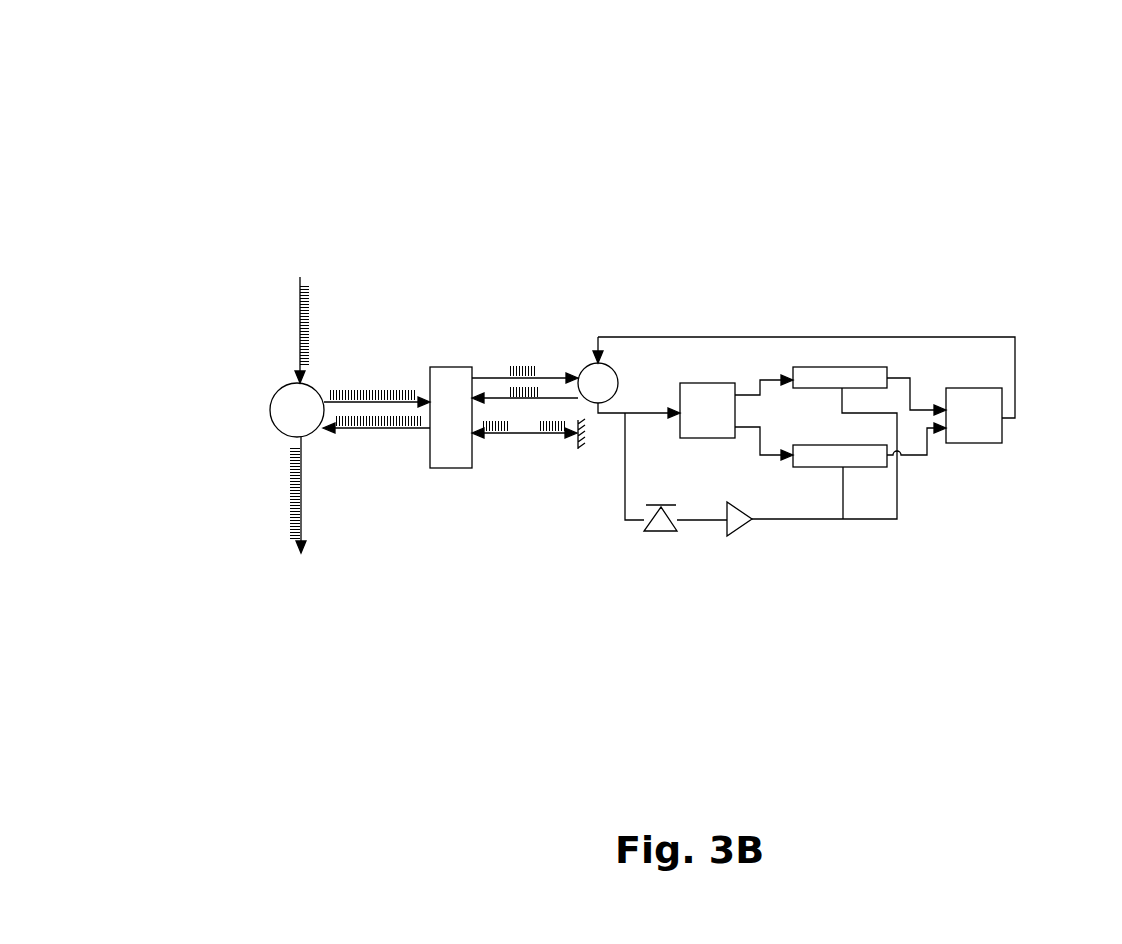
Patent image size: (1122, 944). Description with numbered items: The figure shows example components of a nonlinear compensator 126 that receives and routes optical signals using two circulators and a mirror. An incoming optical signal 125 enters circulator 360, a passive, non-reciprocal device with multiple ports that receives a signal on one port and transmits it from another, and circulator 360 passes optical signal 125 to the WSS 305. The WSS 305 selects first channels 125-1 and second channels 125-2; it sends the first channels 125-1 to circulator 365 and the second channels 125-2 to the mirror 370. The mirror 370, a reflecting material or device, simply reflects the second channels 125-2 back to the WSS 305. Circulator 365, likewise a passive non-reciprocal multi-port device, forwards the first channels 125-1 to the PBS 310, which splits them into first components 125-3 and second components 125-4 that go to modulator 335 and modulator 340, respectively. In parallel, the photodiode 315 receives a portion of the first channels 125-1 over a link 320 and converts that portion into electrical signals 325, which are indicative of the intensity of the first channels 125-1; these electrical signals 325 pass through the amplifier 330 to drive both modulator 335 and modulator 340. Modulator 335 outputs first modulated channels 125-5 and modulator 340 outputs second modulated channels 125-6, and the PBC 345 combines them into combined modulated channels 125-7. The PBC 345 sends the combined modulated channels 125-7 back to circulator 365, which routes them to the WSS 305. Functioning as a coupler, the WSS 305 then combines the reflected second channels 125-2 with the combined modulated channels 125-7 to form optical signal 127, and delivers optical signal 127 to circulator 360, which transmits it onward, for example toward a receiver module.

The nonlinear compensator 126 is at (228, 42).
The optical signal 125 is at (297, 330).
The optical signal 127 is at (383, 430).
The WSS 305 is at (430, 378).
The PBS 310 is at (713, 383).
The photodiode 315 is at (665, 533).
The link 320 is at (630, 522).
The electrical signals 325 is at (848, 502).
The amplifier 330 is at (737, 534).
The modulator 335 is at (832, 367).
The modulator 340 is at (822, 445).
The PBC 345 is at (980, 443).
The circulator 360 is at (270, 404).
The circulator 365 is at (613, 337).
The mirror 370 is at (572, 437).
The first channels 125-1 is at (478, 372).
The second channels 125-2 is at (518, 436).
The first components 125-3 is at (762, 380).
The second components 125-4 is at (768, 458).
The first modulated channels 125-5 is at (900, 372).
The second modulated channels 125-6 is at (927, 441).
The combined modulated channels 125-7 is at (553, 385).